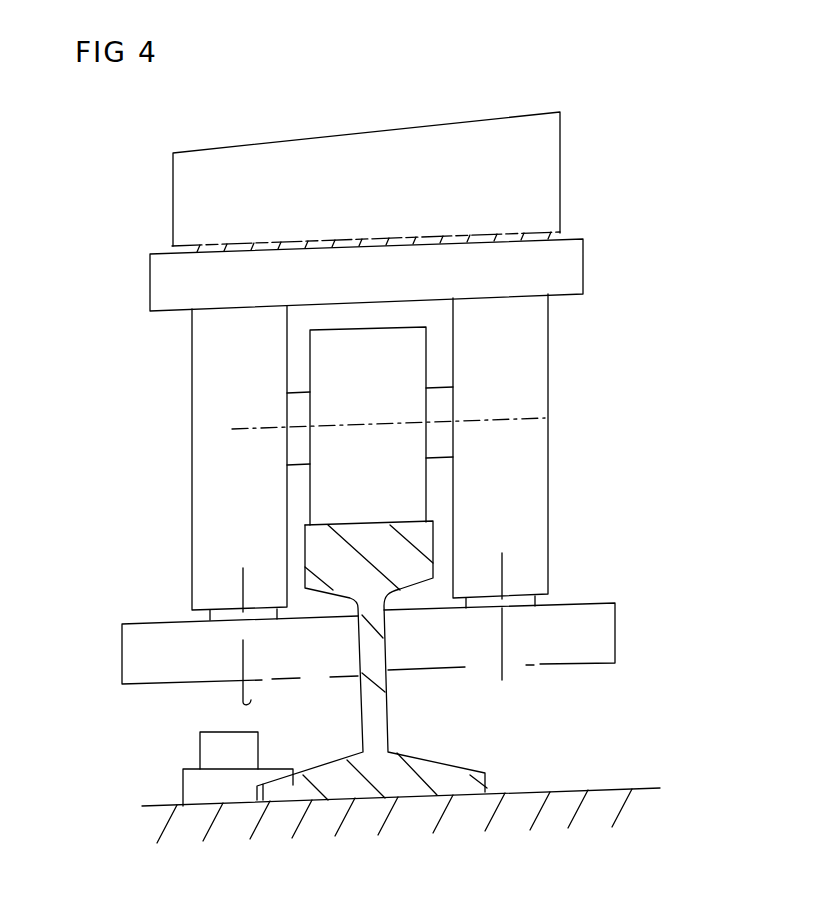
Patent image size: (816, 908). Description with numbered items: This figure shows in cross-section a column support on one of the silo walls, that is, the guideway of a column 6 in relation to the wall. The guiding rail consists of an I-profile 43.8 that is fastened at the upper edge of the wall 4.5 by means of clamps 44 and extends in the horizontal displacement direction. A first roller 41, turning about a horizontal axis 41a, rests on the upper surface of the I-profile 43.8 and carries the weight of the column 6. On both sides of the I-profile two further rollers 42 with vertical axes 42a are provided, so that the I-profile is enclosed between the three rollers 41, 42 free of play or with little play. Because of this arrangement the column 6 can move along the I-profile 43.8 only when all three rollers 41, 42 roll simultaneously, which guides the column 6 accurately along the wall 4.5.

The column 6 is at (550, 160).
The first roller 41 is at (398, 372).
The horizontal axis 41a is at (520, 418).
The rollers 42 is at (160, 632).
The vertical axes 42a is at (568, 688).
The anchor element 43.8 is at (378, 724).
The stop block 44 is at (190, 783).
The base 4.5 is at (384, 828).